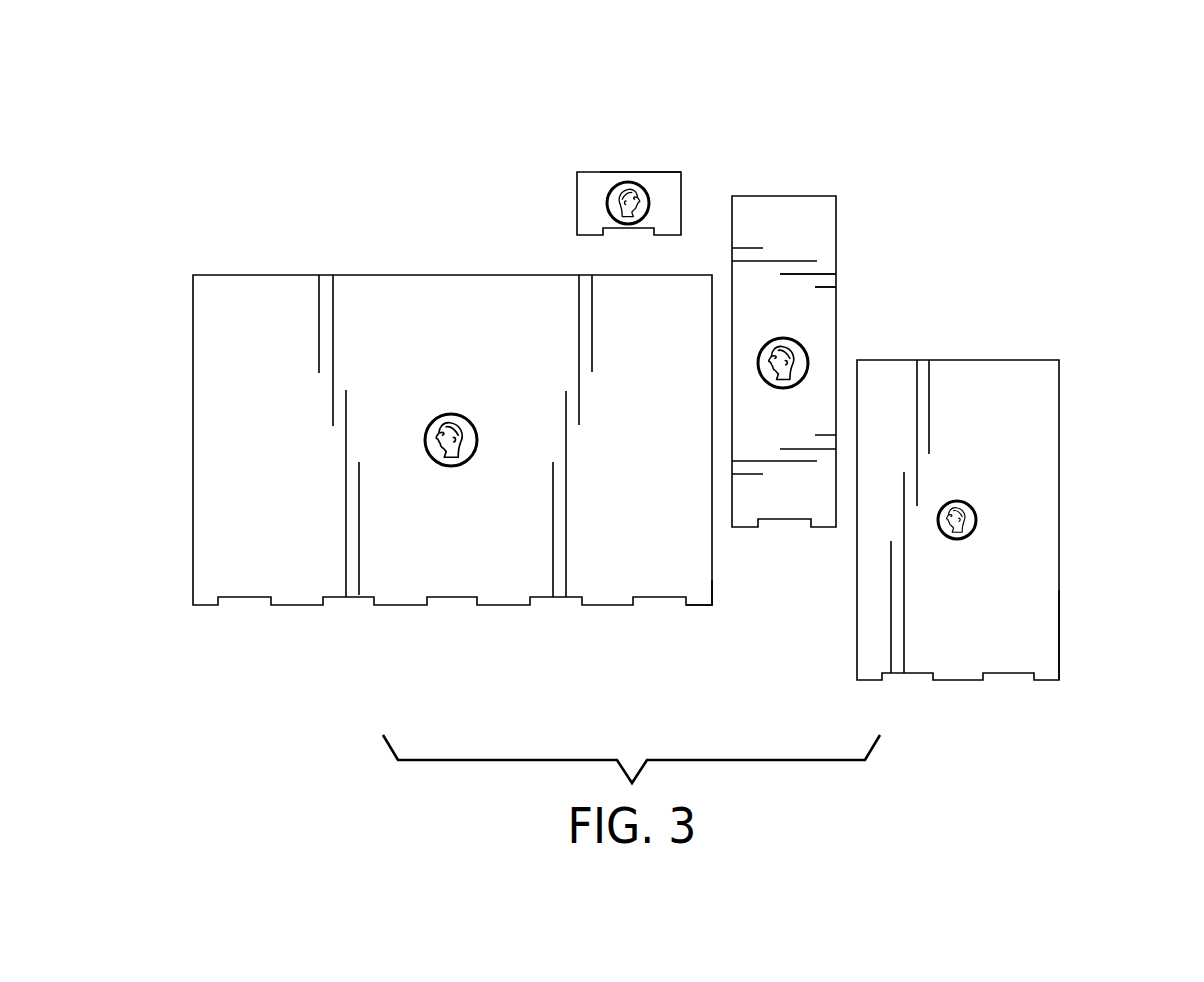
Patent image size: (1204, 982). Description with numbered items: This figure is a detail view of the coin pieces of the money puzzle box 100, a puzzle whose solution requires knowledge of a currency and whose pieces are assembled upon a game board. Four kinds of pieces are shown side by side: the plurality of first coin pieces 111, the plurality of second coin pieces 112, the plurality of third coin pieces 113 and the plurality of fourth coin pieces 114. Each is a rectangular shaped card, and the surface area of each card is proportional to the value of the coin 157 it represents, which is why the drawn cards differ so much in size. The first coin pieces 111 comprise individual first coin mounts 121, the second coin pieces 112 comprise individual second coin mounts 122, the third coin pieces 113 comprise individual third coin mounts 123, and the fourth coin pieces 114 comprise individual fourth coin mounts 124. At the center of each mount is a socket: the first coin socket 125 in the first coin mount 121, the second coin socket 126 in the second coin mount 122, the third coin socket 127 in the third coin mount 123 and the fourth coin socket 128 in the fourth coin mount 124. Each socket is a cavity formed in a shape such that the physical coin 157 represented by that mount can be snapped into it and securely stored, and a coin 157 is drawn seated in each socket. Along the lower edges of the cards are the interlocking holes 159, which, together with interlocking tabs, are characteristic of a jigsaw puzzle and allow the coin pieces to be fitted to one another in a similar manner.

The money puzzle box 100 is at (257, 125).
The plurality of first coin pieces 111 is at (292, 298).
The plurality of second coin pieces 112 is at (1040, 403).
The plurality of third coin pieces 113 is at (836, 249).
The plurality of fourth coin pieces 114 is at (670, 193).
The individual first coin mount 121 is at (713, 590).
The individual second coin mount 122 is at (1060, 616).
The individual third coin mount 123 is at (836, 294).
The individual fourth coin mount 124 is at (640, 172).
The first coin socket 125 is at (478, 443).
The second coin socket 126 is at (977, 520).
The third coin socket 127 is at (807, 353).
The fourth coin socket 128 is at (649, 212).
The coin 157 is at (460, 416).
The interlocking holes 159 is at (247, 600).